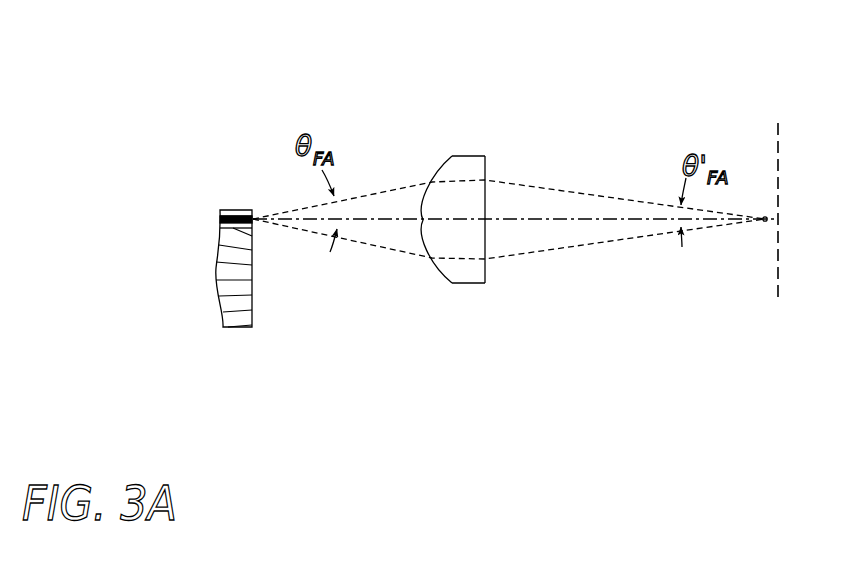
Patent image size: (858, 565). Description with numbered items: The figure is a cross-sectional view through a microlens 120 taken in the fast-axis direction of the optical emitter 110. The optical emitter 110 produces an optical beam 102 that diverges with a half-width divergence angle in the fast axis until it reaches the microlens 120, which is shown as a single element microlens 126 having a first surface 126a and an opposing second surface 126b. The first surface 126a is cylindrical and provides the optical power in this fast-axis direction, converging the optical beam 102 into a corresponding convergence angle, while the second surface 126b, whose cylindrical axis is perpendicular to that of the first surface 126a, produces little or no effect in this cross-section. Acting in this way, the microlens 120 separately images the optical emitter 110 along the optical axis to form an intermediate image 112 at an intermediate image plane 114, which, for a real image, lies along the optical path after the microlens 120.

The optical emitter 110 is at (237, 212).
The single element microlens 126 is at (454, 160).
The first surface 126a is at (440, 164).
The second surface 126b is at (488, 161).
The optical beam 102 is at (553, 237).
The microlens 120 is at (420, 309).
The intermediate image 112 is at (760, 228).
The intermediate image plane 114 is at (778, 283).